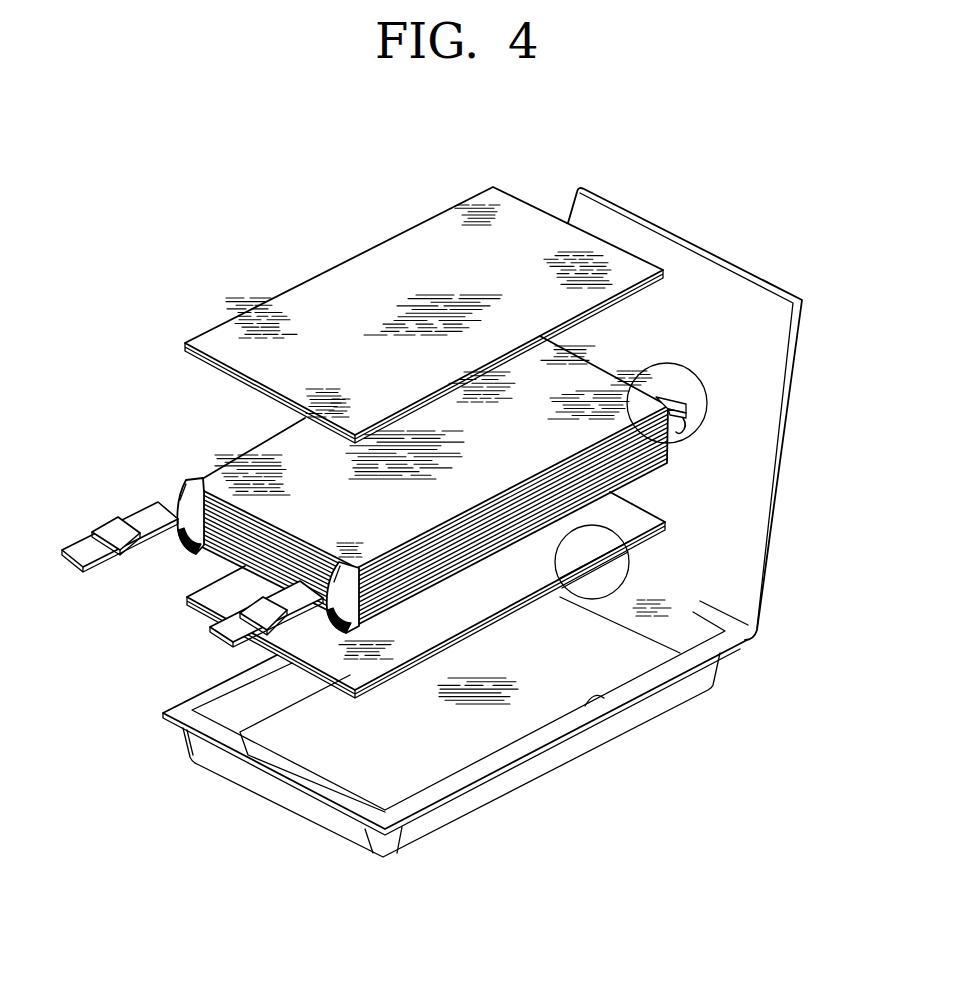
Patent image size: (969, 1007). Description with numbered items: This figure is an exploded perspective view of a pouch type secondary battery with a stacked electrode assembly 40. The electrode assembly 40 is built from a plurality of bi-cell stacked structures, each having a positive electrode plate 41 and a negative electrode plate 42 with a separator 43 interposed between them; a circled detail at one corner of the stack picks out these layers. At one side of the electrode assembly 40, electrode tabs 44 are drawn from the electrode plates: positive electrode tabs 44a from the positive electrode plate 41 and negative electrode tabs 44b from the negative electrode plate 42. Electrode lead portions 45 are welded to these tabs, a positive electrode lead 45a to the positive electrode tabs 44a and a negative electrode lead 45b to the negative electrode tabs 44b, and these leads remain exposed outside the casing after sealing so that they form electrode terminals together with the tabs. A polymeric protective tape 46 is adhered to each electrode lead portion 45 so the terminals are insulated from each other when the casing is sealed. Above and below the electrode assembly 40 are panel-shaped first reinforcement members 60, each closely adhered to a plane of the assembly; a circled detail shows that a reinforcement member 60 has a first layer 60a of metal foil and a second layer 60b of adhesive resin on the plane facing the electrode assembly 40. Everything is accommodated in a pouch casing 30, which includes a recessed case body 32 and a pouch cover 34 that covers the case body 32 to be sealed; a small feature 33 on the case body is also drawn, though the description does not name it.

The pouch casing 30 is at (835, 580).
The case body 32 is at (710, 673).
The vent/notch in case body 33 is at (603, 700).
The pouch cover 34 is at (763, 583).
The electrode assembly 40 is at (614, 392).
The positive electrode plate 41 is at (683, 403).
The negative electrode plate 42 is at (684, 428).
The separator 43 is at (687, 415).
The electrode tabs 44 is at (177, 388).
The positive electrode tabs 44a is at (185, 503).
The negative electrode tabs 44b is at (335, 573).
The electrode lead portions 45 is at (147, 690).
The positive electrode lead 45a is at (73, 568).
The negative electrode lead 45b is at (212, 633).
The polymeric protective tape 46 is at (110, 527).
The first reinforcement member 60 is at (264, 294).
The first layer 60a is at (615, 558).
The second layer 60b is at (616, 548).